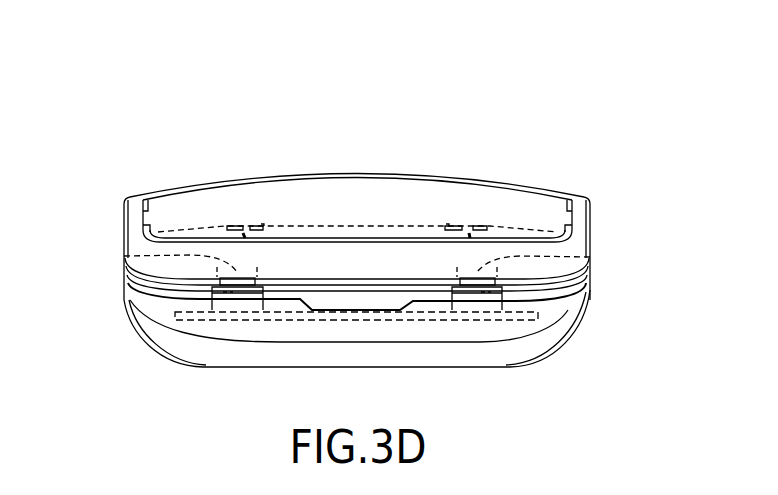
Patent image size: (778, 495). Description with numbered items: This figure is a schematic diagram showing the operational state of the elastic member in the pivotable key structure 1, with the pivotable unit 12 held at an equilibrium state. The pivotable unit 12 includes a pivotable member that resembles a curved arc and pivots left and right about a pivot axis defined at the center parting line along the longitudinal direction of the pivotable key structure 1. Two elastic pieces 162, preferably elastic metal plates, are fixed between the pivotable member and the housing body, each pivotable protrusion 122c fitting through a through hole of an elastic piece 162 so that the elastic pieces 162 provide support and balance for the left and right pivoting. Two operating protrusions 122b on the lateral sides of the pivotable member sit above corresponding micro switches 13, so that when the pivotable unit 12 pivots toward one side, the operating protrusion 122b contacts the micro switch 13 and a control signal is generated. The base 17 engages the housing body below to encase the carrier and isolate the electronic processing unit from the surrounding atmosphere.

The pivotable key structure 1 is at (57, 81).
The pivotable unit 12 is at (393, 188).
The operating protrusion 122b is at (124, 256).
The pivotable protrusion 122c is at (245, 236).
The micro switch 13 is at (172, 296).
The elastic piece 162 is at (207, 222).
The base 17 is at (573, 323).